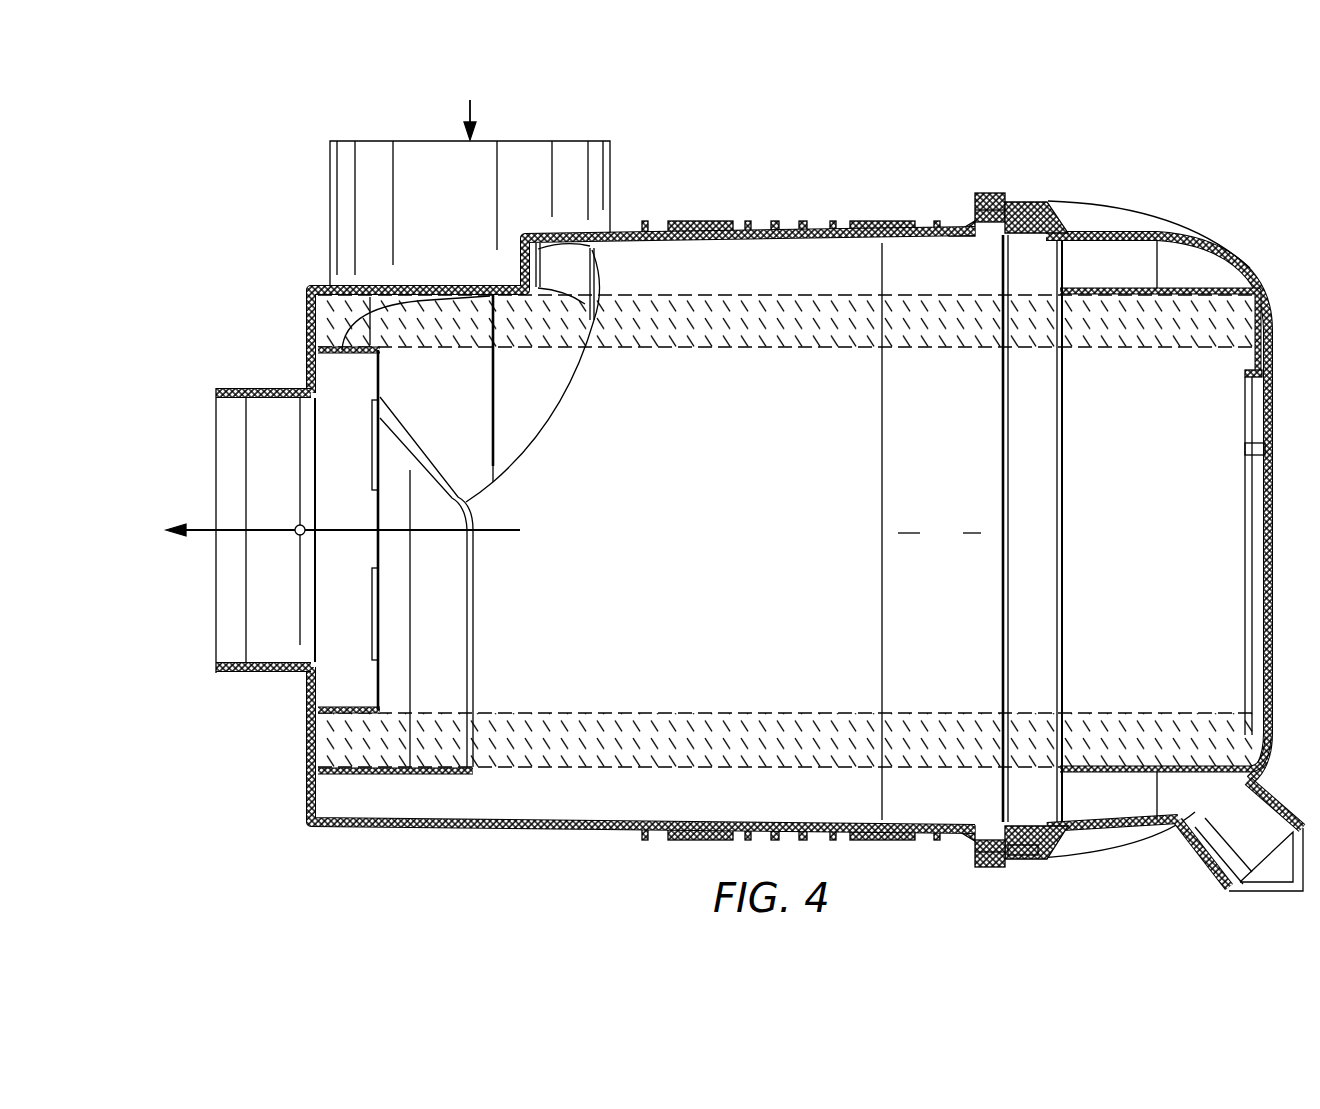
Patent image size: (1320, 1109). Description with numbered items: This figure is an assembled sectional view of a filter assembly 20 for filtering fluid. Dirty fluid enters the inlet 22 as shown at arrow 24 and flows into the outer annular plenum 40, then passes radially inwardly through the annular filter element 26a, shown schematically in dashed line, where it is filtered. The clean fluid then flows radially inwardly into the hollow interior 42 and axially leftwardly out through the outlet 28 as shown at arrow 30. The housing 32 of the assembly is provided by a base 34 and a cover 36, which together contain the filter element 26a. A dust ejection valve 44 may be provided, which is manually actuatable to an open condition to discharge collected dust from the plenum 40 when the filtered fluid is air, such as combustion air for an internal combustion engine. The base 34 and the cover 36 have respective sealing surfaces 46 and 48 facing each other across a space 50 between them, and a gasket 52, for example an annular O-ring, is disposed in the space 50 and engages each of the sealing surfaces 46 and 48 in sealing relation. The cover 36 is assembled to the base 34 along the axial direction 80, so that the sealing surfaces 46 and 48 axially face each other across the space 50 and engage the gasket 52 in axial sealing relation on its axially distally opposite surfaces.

The filter assembly 20 is at (803, 185).
The inlet 22 is at (575, 141).
The arrow 24 is at (466, 112).
The filter element 26a is at (838, 348).
The outlet 28 is at (226, 660).
The arrow 30 is at (197, 525).
The housing 32 is at (882, 230).
The base 34 is at (584, 830).
The cover 36 is at (1094, 832).
The outer annular plenum 40 is at (676, 279).
The hollow interior 42 is at (676, 551).
The dust ejection valve 44 is at (1262, 890).
The sealing surface 46 is at (1020, 860).
The sealing surface 48 is at (1038, 858).
The space 50 is at (1026, 840).
The gasket 52 is at (1015, 212).
The axial direction 80 is at (941, 522).